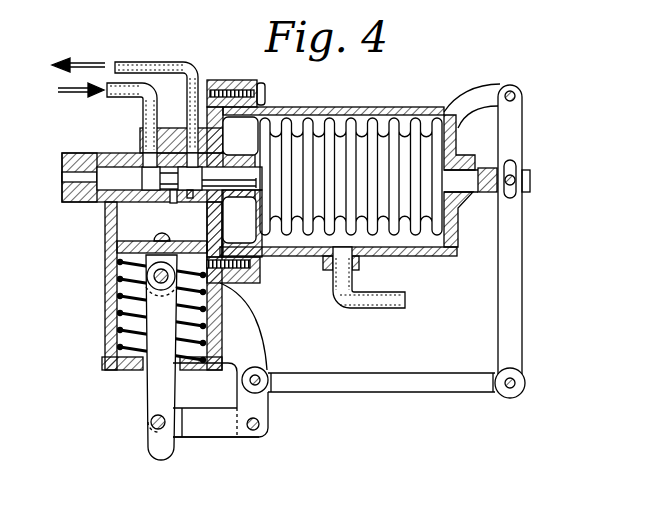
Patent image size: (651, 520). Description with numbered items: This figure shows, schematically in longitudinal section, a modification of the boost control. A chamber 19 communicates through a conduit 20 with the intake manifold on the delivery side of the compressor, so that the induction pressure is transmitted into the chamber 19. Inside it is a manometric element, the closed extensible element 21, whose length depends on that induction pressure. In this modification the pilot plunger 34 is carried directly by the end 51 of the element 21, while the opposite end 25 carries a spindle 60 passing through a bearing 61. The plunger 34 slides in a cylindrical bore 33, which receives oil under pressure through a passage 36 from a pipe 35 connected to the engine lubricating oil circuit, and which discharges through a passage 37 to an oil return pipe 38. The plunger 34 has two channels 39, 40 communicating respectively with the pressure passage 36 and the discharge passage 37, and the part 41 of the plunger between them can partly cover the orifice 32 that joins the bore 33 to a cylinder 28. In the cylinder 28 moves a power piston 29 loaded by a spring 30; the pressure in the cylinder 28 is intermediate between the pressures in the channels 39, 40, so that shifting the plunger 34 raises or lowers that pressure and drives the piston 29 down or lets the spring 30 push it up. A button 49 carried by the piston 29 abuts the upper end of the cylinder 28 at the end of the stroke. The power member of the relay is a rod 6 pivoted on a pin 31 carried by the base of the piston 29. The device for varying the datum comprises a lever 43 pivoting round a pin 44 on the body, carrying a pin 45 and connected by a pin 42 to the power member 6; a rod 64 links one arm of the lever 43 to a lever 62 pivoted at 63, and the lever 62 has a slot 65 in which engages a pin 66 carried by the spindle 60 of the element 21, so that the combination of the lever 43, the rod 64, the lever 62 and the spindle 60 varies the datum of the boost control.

The rod 6 is at (162, 390).
The chamber 19 is at (425, 241).
The conduit 20 is at (383, 302).
The closed extensible element 21 is at (310, 138).
The end of the element 25 is at (445, 112).
The cylinder 28 is at (252, 278).
The power piston 29 is at (122, 263).
The spring 30 is at (122, 307).
The pin 31 is at (168, 280).
The orifice 32 is at (172, 198).
The cylindrical bore 33 is at (190, 193).
The plunger 34 is at (240, 175).
The pipe 35 is at (122, 90).
The passage 36 is at (170, 186).
The passage 37 is at (192, 157).
The pipe 38 is at (130, 66).
The channel 39 is at (152, 188).
The channel 40 is at (205, 233).
The part of the plunger 41 is at (160, 183).
The pin 42 is at (165, 430).
The lever 43 is at (217, 430).
The pin 44 is at (258, 425).
The pin 45 is at (258, 377).
The button 49 is at (158, 237).
The end of the element 51 is at (256, 232).
The spindle 60 is at (465, 205).
The bearing 61 is at (463, 158).
The lever 62 is at (510, 250).
The pivot 63 is at (513, 93).
The rod 64 is at (369, 382).
The slot 65 is at (516, 170).
The pin 66 is at (513, 183).